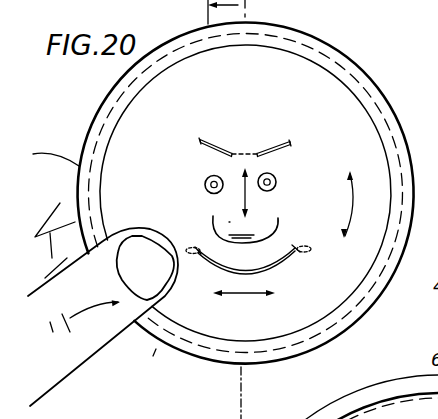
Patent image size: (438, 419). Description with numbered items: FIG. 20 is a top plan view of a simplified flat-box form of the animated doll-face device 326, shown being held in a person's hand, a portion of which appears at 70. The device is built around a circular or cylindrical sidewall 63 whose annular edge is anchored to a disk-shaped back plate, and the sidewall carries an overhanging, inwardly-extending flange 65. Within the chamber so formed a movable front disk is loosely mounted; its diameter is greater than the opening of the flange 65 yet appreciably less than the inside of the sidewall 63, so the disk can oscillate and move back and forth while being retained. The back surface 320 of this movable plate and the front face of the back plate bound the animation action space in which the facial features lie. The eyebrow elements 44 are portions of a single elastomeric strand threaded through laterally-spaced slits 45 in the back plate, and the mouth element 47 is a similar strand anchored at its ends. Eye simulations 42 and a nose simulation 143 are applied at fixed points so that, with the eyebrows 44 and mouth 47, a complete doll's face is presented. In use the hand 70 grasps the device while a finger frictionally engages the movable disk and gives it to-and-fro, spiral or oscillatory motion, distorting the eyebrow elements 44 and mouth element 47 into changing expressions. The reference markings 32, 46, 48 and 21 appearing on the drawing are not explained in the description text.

The device 326 is at (336, 49).
The sidewall 63 is at (118, 80).
The flange 65 is at (356, 307).
The face plate 32 is at (364, 166).
The back surface of the movable front plate 320 is at (419, 90).
The eyebrow elements 44 is at (215, 138).
The slits 45 is at (256, 153).
The eyebrow ends 46 is at (199, 140).
The eye simulations 42 is at (204, 184).
The nose simulation 143 is at (262, 223).
The mouth element 47 is at (273, 267).
The mouth pivots 48 is at (195, 256).
The hand 70 is at (117, 344).
The dimension line 21 is at (249, 402).